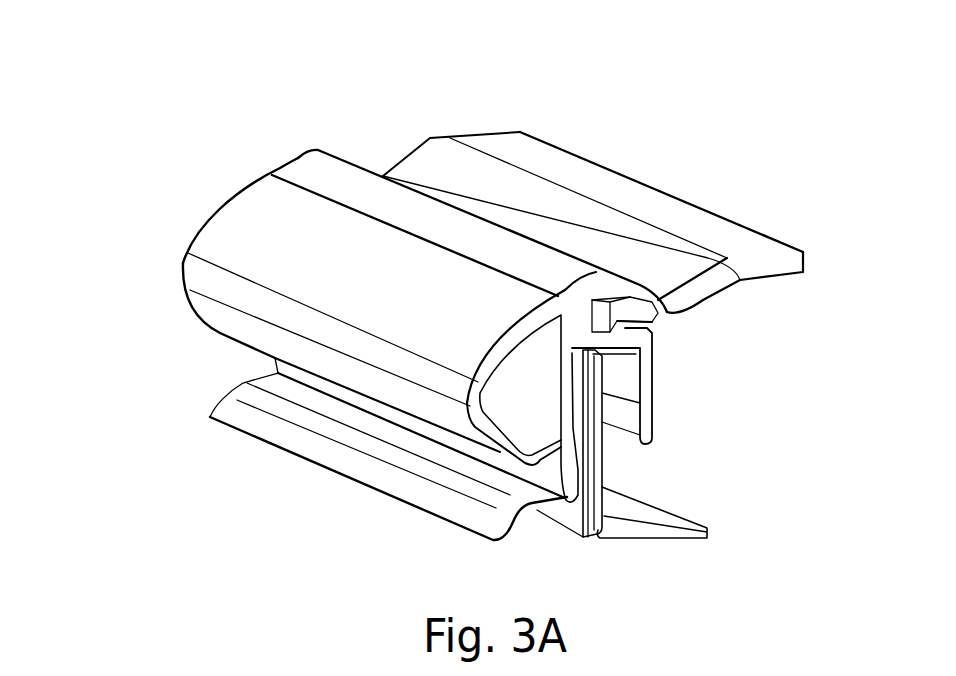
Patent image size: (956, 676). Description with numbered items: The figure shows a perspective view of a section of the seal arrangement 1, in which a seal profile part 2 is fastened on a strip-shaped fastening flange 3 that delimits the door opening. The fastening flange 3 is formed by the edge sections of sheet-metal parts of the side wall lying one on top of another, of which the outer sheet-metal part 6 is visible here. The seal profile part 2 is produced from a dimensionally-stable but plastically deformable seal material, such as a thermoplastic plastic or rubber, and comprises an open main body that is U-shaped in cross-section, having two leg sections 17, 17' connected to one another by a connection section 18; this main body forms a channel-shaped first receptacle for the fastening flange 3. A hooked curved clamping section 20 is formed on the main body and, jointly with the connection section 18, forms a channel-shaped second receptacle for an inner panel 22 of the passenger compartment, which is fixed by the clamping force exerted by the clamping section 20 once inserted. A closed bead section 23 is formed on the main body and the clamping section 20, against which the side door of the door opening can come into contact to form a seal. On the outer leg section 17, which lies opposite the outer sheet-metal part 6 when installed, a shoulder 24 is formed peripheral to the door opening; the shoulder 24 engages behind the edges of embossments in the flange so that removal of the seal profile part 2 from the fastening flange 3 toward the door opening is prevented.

The seal arrangement 1 is at (132, 142).
The seal profile part 2 is at (309, 118).
The fastening flange 3 is at (600, 462).
The sheet-metal part 6 is at (503, 500).
The leg section 17 is at (459, 405).
The leg section 17' is at (670, 386).
The connection section 18 is at (624, 336).
The clamping section 20 is at (355, 187).
The inner panel 22 is at (730, 238).
The bead section 23 is at (268, 213).
The shoulder 24 is at (580, 434).